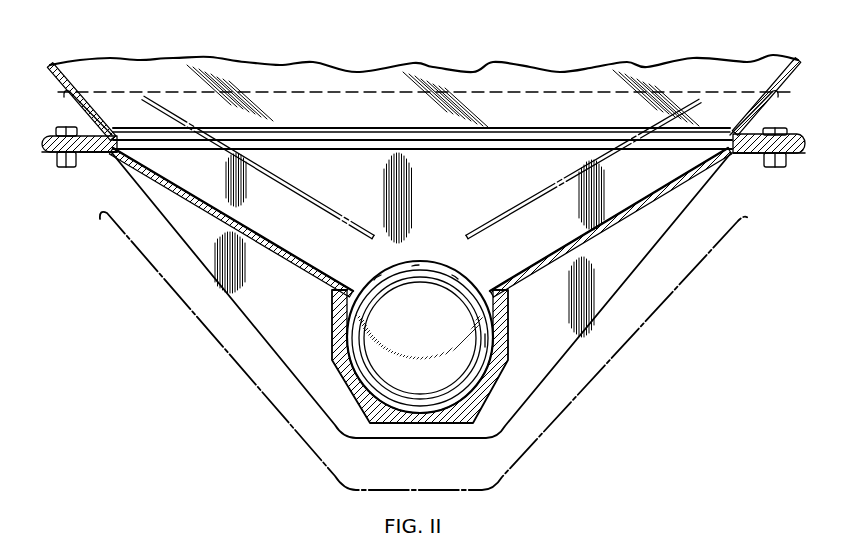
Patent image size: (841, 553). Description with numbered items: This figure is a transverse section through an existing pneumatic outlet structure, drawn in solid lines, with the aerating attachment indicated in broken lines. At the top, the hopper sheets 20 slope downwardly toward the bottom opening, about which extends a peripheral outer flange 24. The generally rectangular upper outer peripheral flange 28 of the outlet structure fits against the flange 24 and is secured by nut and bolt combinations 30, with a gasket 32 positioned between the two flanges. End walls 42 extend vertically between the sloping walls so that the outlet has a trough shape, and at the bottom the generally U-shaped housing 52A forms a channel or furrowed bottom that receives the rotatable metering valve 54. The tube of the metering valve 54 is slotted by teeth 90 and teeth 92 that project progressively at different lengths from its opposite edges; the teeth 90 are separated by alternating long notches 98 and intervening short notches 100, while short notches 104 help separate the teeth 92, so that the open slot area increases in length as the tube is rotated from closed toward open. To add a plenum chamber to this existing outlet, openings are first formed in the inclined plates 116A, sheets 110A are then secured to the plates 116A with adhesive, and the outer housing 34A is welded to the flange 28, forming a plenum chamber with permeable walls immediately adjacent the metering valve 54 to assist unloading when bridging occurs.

The hopper sheets 20 is at (62, 93).
The peripheral outer flange 24 is at (54, 137).
The upper outer peripheral flange 28 is at (45, 155).
The nut and bolt combinations 30 is at (60, 168).
The gasket 32 is at (90, 153).
The sheets 110A is at (302, 196).
The plates 116A is at (260, 235).
The end walls 42 is at (290, 309).
The outer housing 34A is at (207, 335).
The U-shaped housing 52A is at (512, 333).
The teeth 92 is at (482, 307).
The metering valve 54 is at (466, 378).
The long notches 98 is at (378, 283).
The short notches 100 is at (415, 266).
The teeth 90 is at (455, 278).
The short notches 104 is at (487, 341).